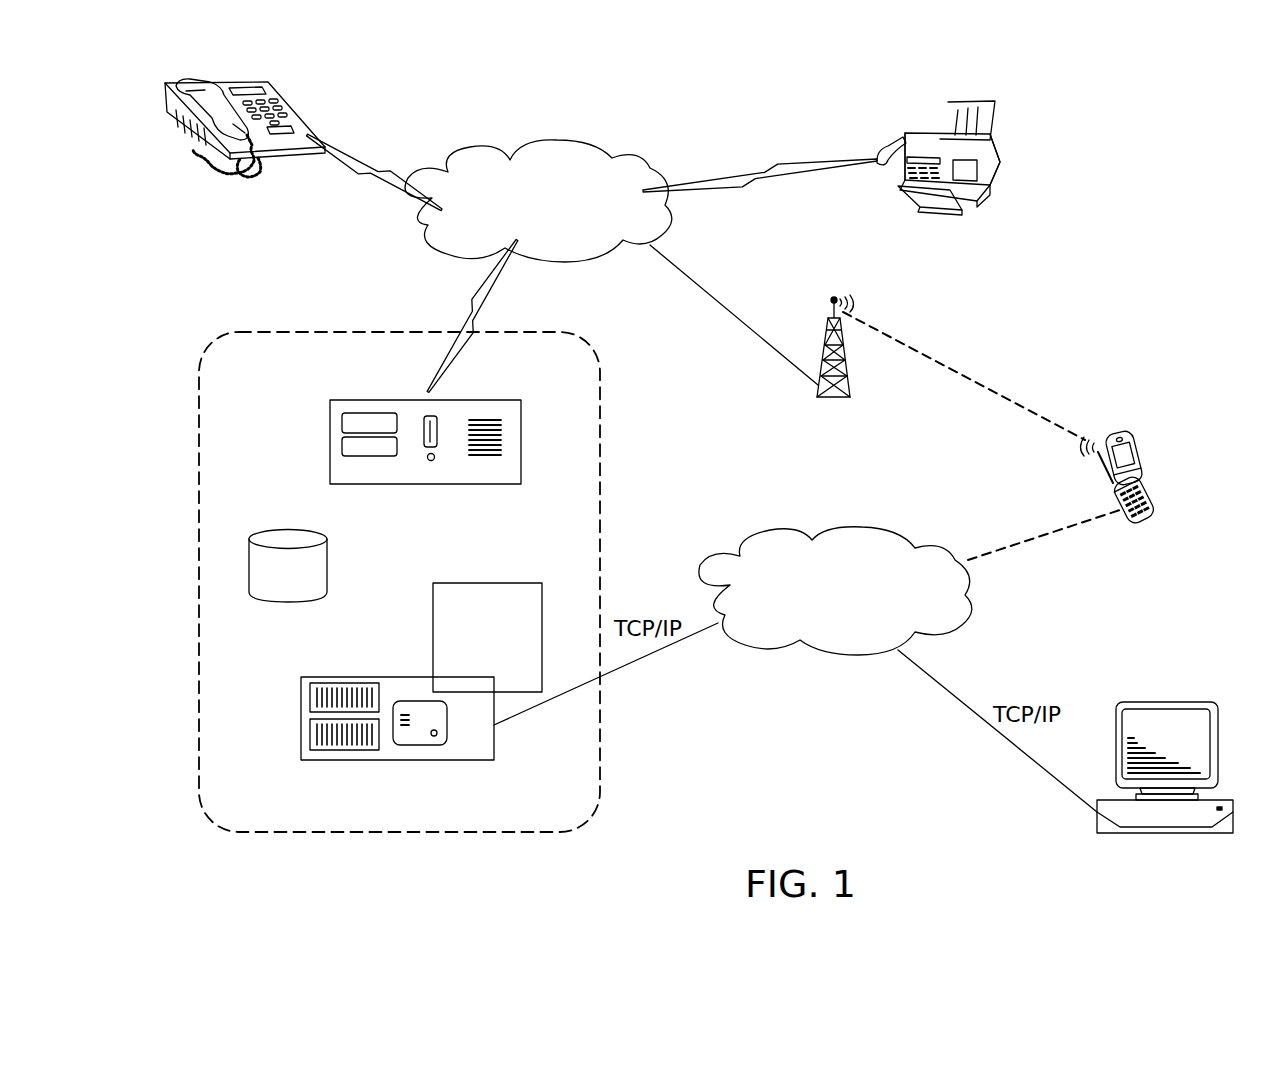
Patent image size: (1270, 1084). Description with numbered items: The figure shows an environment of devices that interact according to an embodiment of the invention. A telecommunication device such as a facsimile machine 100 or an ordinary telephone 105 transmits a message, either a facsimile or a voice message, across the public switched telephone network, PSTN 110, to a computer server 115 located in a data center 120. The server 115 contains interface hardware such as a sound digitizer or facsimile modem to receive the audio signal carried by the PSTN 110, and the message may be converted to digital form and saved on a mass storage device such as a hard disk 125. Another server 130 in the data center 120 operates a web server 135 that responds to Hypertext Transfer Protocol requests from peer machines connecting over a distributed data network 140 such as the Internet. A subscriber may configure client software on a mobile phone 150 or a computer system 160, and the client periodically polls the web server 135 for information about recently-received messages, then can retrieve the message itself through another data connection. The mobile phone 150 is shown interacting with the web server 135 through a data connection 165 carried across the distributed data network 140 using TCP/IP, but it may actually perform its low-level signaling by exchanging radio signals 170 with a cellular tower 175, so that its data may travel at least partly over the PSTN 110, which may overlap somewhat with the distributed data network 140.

The facsimile machine 100 is at (988, 186).
The telephone 105 is at (275, 93).
The public switched telephone network (PSTN) 110 is at (589, 247).
The computer server 115 is at (498, 485).
The data center 120 is at (594, 820).
The hard disk 125 is at (268, 585).
The server 130 is at (451, 762).
The web server 135 is at (431, 642).
The distributed data network 140 is at (826, 637).
The mobile phone 150 is at (1156, 512).
The computer system 160 is at (1212, 835).
The data connection 165 is at (1055, 534).
The radio signals 170 is at (994, 392).
The cellular tower 175 is at (818, 393).